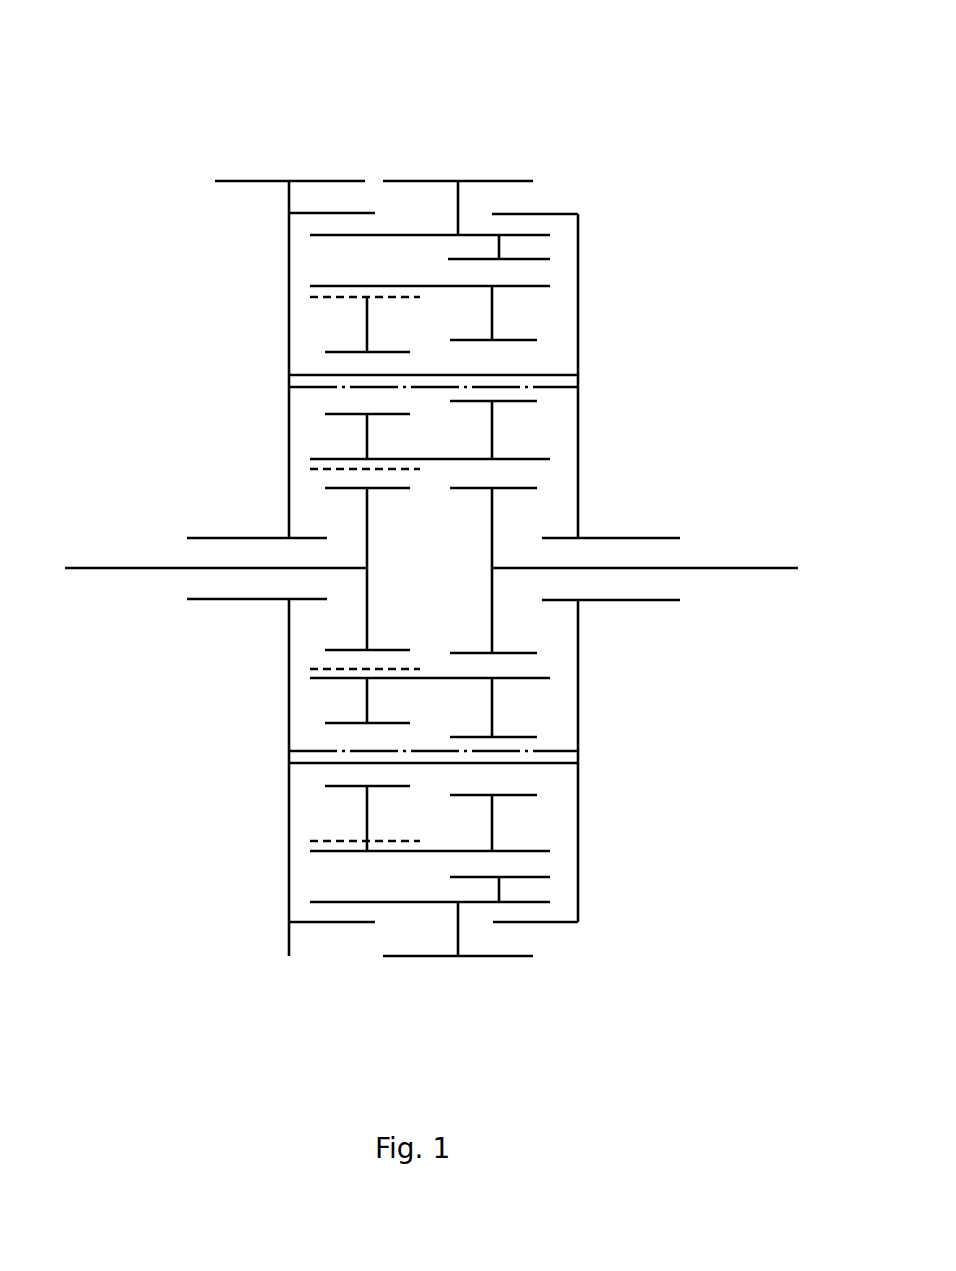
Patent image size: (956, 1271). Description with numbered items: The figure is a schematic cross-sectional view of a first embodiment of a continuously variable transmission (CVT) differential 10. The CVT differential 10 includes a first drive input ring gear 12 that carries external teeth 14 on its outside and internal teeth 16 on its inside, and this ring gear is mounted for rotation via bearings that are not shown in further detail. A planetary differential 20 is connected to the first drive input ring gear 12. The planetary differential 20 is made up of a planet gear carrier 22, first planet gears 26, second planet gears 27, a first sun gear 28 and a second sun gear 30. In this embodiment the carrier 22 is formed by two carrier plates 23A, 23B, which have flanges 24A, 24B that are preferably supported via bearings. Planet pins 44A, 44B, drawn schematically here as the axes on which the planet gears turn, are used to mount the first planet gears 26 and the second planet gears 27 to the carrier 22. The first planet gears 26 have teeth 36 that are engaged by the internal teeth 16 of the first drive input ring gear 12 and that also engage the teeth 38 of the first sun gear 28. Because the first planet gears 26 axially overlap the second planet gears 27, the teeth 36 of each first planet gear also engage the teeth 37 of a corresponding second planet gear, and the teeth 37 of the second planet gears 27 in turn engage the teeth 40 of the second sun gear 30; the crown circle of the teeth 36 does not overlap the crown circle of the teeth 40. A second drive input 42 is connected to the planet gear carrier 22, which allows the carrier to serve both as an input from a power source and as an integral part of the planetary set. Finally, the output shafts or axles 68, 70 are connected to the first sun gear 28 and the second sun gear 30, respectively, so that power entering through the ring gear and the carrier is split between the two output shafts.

The continuously variable transmission differential 10 is at (646, 171).
The first drive input ring gear 12 is at (327, 234).
The external teeth 14 is at (500, 180).
The internal teeth 16 is at (547, 258).
The planetary differential 20 is at (562, 302).
The planet gear carrier 22 is at (578, 335).
The carrier plate 23A is at (578, 437).
The carrier plate 23B is at (290, 452).
The flange 24A is at (663, 538).
The flange 24B is at (207, 538).
The first planet gears 26 is at (456, 286).
The second planet gears 27 is at (330, 467).
The first sun gear 28 is at (397, 650).
The second sun gear 30 is at (493, 626).
The teeth 36 is at (533, 288).
The teeth 37 is at (317, 295).
The teeth 38 is at (340, 487).
The teeth 40 is at (522, 485).
The second drive input 42 is at (256, 181).
The planet pin 44A is at (548, 374).
The planet pin 44B is at (548, 387).
The output shaft or axle 68 is at (93, 570).
The output shaft or axle 70 is at (758, 568).